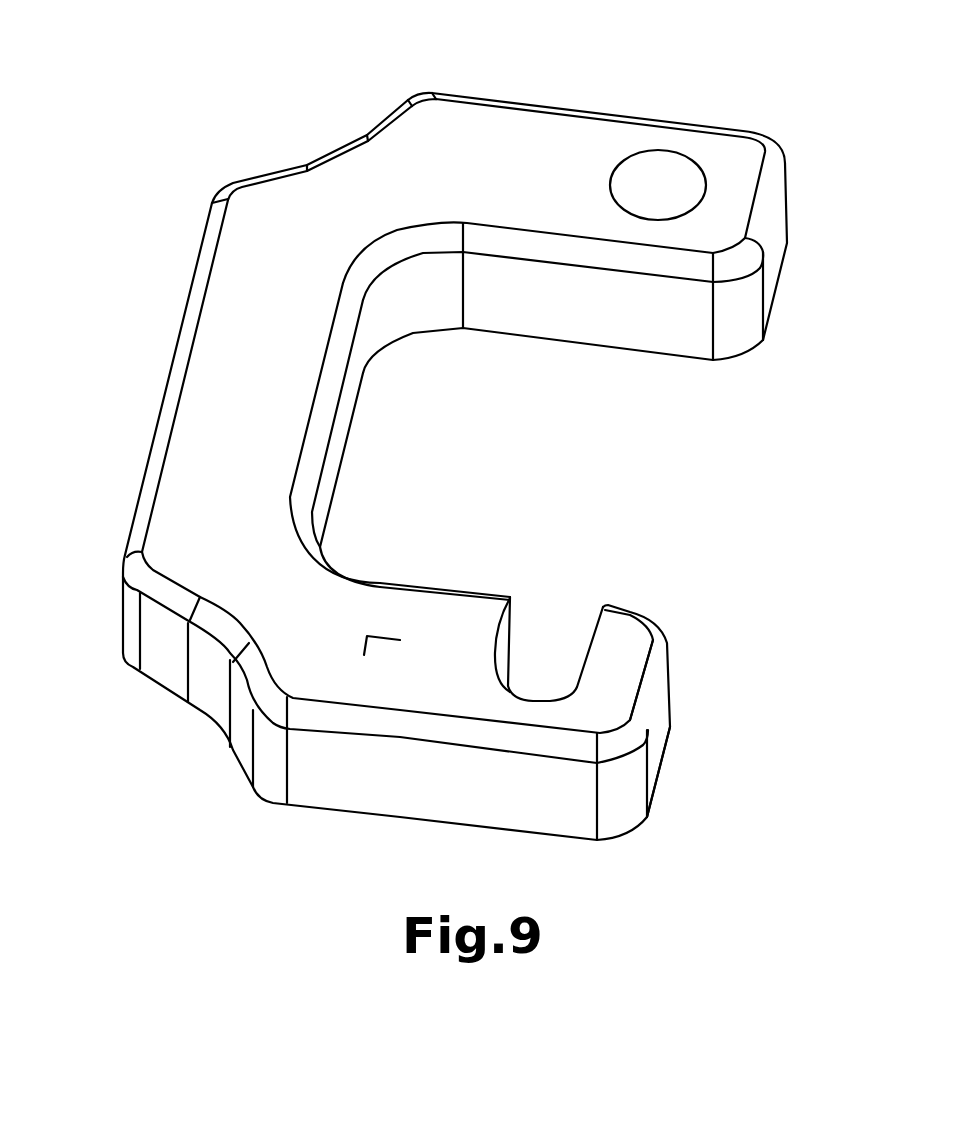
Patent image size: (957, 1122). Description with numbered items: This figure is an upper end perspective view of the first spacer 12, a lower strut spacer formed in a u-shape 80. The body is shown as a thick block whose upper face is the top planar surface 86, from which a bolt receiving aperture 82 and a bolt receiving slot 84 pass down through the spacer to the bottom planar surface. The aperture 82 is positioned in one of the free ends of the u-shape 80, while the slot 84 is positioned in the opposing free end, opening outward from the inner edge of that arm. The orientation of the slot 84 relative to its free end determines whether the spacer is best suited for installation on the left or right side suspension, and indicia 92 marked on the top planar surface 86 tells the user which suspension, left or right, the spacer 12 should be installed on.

The u-shape 80 is at (735, 528).
The bolt receiving aperture 82 is at (658, 183).
The bolt receiving slot 84 is at (553, 660).
The first spacer 12 is at (215, 325).
The top planar surface 86 is at (213, 533).
The indicia 92 is at (380, 650).